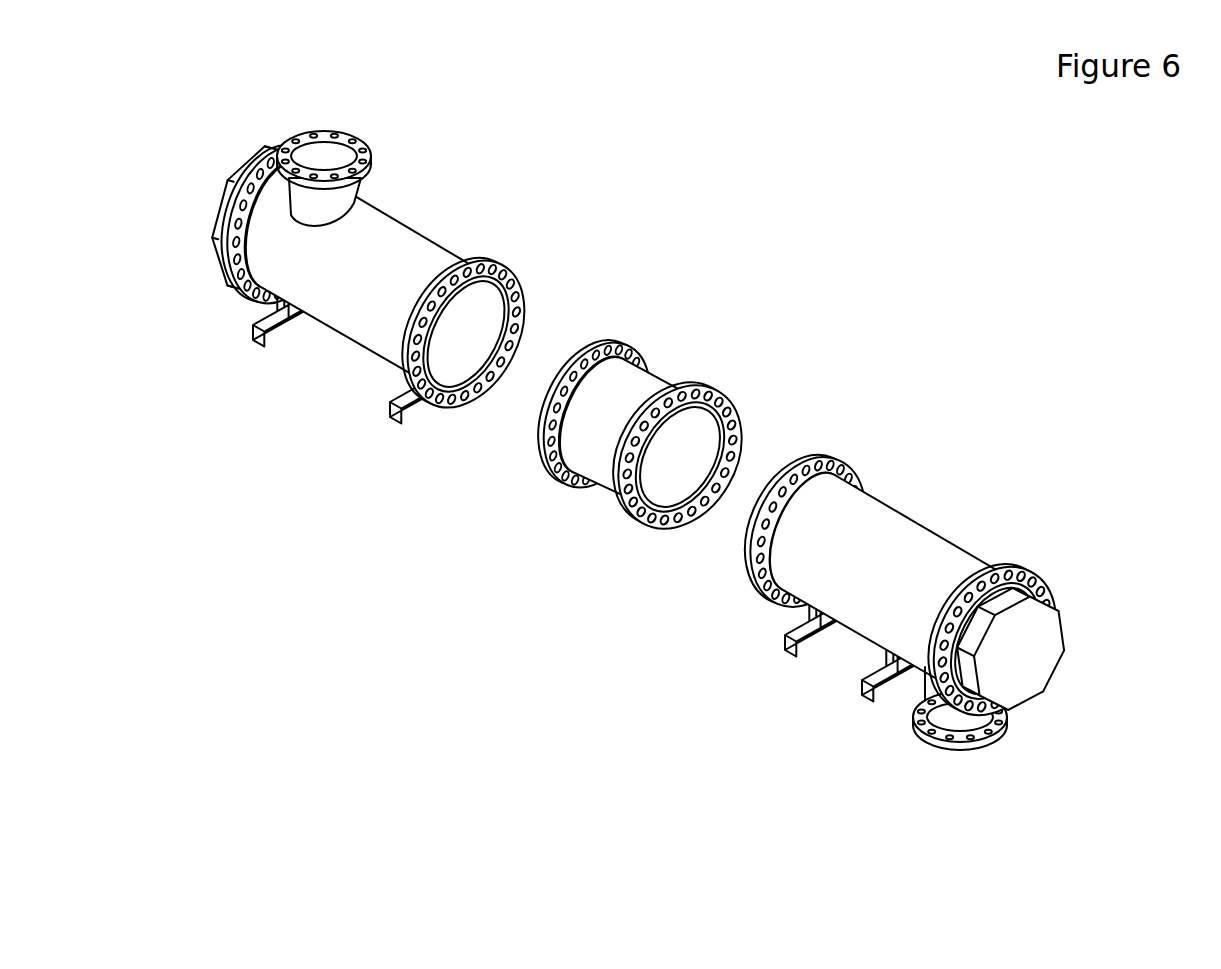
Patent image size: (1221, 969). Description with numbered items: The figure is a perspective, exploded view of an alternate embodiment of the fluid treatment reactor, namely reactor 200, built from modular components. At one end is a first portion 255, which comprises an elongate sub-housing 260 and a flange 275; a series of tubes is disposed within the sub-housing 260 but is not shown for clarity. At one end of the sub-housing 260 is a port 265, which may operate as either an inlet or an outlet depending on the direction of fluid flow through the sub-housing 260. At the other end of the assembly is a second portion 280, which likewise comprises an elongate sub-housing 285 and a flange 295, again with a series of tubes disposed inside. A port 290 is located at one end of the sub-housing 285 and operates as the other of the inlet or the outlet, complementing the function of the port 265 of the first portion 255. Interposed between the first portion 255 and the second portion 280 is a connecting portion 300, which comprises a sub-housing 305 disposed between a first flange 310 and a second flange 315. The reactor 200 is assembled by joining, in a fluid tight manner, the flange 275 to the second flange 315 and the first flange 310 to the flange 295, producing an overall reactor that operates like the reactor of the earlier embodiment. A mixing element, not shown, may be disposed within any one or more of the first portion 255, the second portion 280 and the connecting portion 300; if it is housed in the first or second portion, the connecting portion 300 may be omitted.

The reactor 200 is at (470, 32).
The first portion 255 is at (441, 206).
The sub-housing 260 is at (370, 315).
The port 265 is at (355, 199).
The flange 275 is at (460, 404).
The connecting portion 300 is at (706, 350).
The sub-housing 305 is at (603, 457).
The first flange 310 is at (681, 540).
The second flange 315 is at (630, 345).
The second portion 280 is at (948, 503).
The sub-housing 285 is at (875, 608).
The port 290 is at (933, 705).
The flange 295 is at (762, 590).